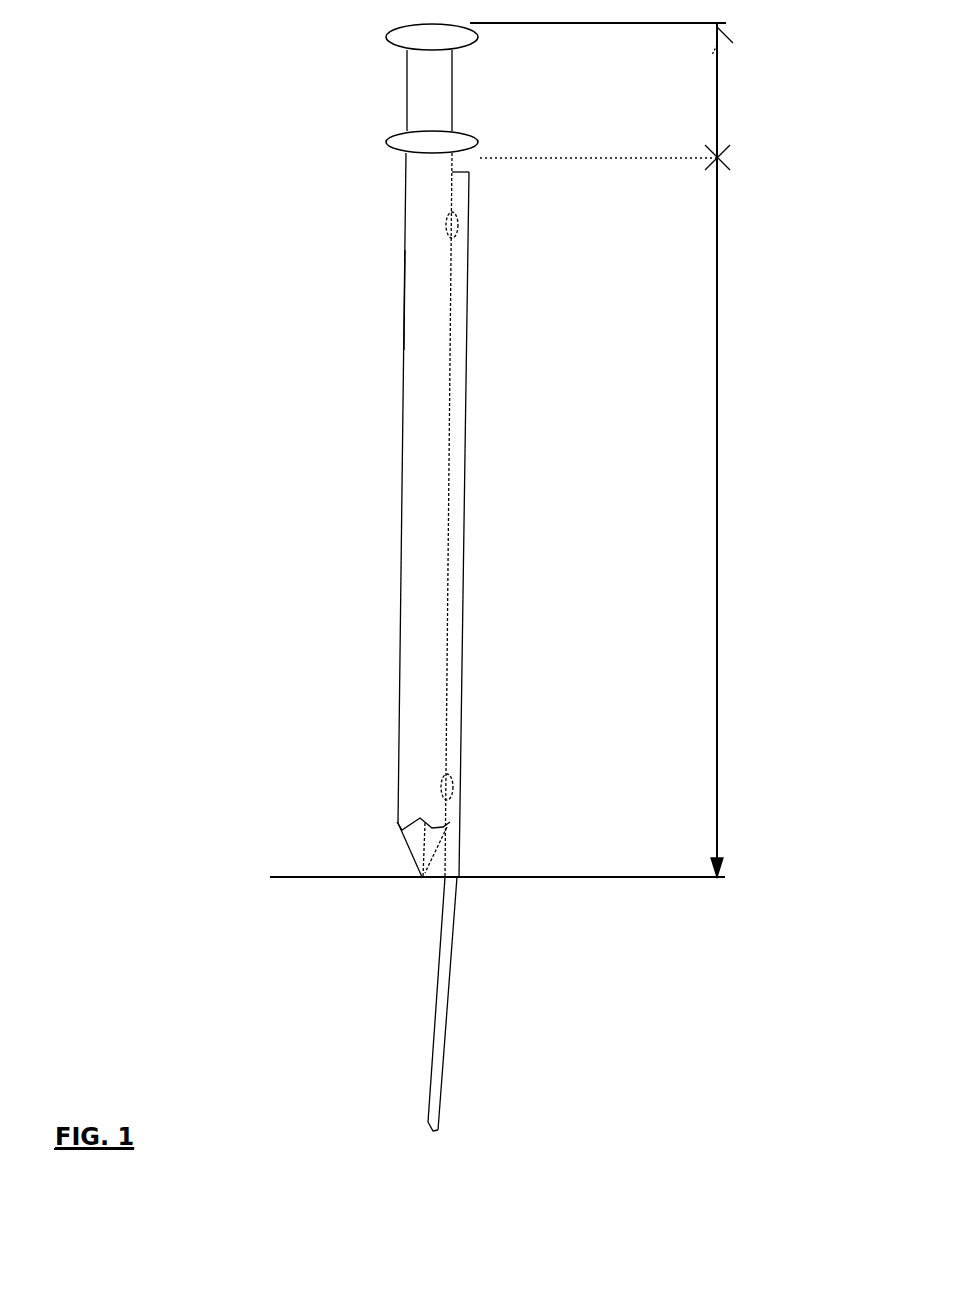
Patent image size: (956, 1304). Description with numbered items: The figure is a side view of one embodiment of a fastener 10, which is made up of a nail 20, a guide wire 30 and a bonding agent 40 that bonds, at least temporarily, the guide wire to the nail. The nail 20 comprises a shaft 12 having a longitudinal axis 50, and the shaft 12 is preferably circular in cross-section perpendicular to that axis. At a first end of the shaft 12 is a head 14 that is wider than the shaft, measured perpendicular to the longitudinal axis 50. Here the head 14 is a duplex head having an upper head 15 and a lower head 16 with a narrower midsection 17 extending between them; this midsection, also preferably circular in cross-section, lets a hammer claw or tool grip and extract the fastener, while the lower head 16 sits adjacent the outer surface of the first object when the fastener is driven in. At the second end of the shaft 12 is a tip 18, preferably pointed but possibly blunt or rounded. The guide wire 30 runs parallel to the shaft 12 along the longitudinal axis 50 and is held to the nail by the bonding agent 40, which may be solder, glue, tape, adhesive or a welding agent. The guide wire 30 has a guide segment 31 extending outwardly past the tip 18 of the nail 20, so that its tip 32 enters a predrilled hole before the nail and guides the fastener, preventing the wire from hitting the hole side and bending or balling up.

The fastener 10 is at (343, 500).
The shaft 12 is at (401, 633).
The head 14 is at (718, 93).
The upper head 15 is at (474, 40).
The lower head 16 is at (480, 148).
The narrower midsection 17 is at (407, 78).
The tip 18 is at (475, 878).
The nail 20 is at (404, 300).
The guide wire 30 is at (467, 505).
The guide segment 31 is at (448, 1010).
The tip 32 is at (437, 1135).
The bonding agent 40 is at (456, 230).
The longitudinal axis 50 is at (718, 450).